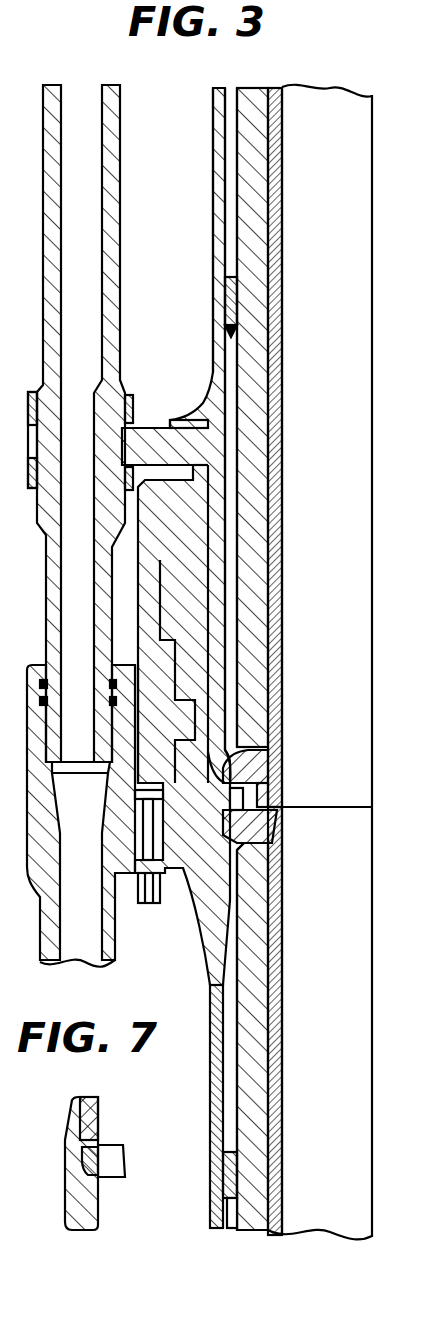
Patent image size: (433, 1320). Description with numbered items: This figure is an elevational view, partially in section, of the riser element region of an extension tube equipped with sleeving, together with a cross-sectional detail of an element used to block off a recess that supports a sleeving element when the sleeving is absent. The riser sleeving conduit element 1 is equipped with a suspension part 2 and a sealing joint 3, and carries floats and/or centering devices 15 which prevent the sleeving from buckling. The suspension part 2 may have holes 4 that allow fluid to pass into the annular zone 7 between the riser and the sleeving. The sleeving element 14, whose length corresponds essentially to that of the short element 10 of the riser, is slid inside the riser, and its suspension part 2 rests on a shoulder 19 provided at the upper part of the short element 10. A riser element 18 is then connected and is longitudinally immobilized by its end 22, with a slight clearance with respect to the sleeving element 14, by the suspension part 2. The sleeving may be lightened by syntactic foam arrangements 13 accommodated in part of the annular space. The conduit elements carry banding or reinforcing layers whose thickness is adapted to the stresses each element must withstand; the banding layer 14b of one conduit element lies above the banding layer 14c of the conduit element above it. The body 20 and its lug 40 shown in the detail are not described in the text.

In FIG. 3, the riser sleeving conduit element 1 is at (281, 157).
In FIG. 3, the suspension part 2 is at (235, 770).
In FIG. 3, the sealing joint 3 is at (262, 780).
In FIG. 3, the holes 4 is at (246, 818).
In FIG. 3, the annular zone 7 is at (232, 225).
In FIG. 3, the short element 10 is at (213, 1213).
In FIG. 3, the syntactic foam arrangement 13 is at (247, 115).
In FIG. 3, the sleeving element 14 is at (283, 918).
In FIG. 3, the banding or reinforcing layer 14b is at (283, 1015).
In FIG. 3, the banding or reinforcing layer 14c is at (281, 222).
In FIG. 3, the centering device 15 is at (230, 272).
In FIG. 3, the riser element 18 is at (218, 170).
In FIG. 3, the shoulder 19 is at (240, 862).
In FIG. 3, the running tool body 20 is at (198, 910).
In FIG. 7, the running tool body 20 is at (70, 1155).
In FIG. 3, the end 22 is at (222, 742).
In FIG. 7, the end 22 is at (98, 1110).
In FIG. 7, the lug 40 is at (99, 1167).